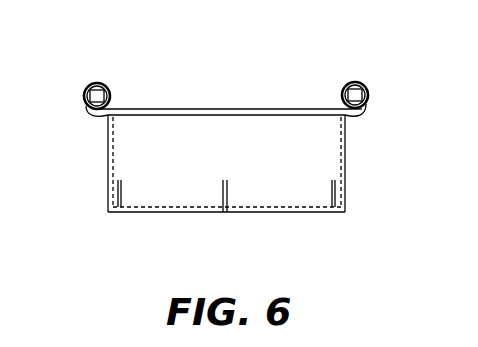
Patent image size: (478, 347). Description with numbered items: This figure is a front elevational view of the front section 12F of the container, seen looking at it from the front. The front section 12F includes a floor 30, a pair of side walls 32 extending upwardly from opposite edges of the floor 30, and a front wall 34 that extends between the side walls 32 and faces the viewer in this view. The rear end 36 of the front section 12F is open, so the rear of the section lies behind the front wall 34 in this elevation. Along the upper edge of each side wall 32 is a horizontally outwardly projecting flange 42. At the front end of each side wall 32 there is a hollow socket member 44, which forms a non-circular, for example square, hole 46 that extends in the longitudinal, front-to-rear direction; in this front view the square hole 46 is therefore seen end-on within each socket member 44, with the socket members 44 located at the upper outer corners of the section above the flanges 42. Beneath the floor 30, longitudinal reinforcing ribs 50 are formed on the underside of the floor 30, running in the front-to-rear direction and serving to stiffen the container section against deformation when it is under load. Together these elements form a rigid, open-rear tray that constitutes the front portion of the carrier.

The front section 12F is at (230, 109).
The hollow socket member 44 is at (96, 83).
The hole 46 is at (110, 91).
The flange 42 is at (88, 108).
The side walls 32 is at (108, 163).
The front wall 34 is at (239, 158).
The floor 30 is at (251, 213).
The longitudinal reinforcing ribs 50 is at (216, 211).
The rear end 36 is at (415, 117).